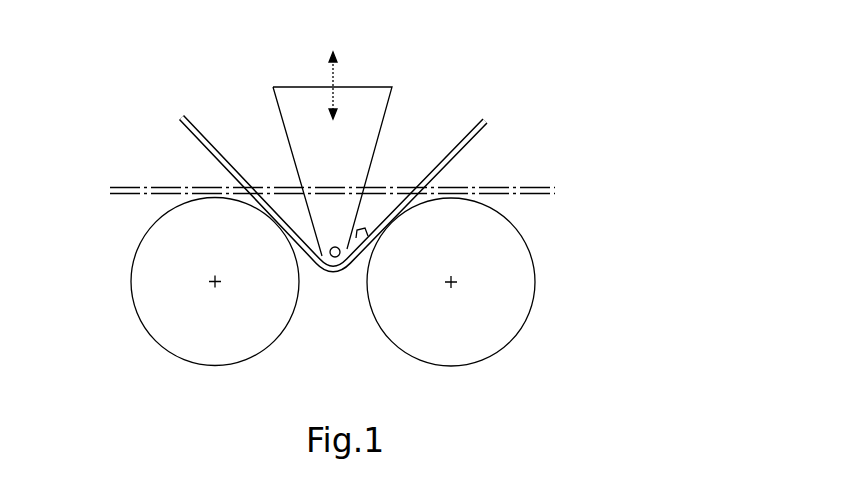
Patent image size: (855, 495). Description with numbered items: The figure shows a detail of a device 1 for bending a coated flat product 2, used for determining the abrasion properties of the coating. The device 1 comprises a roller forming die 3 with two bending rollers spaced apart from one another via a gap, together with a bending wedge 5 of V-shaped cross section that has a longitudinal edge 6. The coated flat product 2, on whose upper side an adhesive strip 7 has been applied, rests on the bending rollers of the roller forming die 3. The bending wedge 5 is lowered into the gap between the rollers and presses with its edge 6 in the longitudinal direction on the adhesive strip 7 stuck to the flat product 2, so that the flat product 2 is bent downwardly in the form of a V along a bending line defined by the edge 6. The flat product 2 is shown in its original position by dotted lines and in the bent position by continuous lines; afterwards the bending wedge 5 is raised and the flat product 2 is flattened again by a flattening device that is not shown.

The device 1 is at (128, 90).
The coated flat product 2 is at (192, 136).
The roller forming die 3 is at (283, 305).
The bending wedge 5 is at (368, 100).
The longitudinal edge 6 is at (353, 255).
The adhesive strip 7 is at (380, 233).